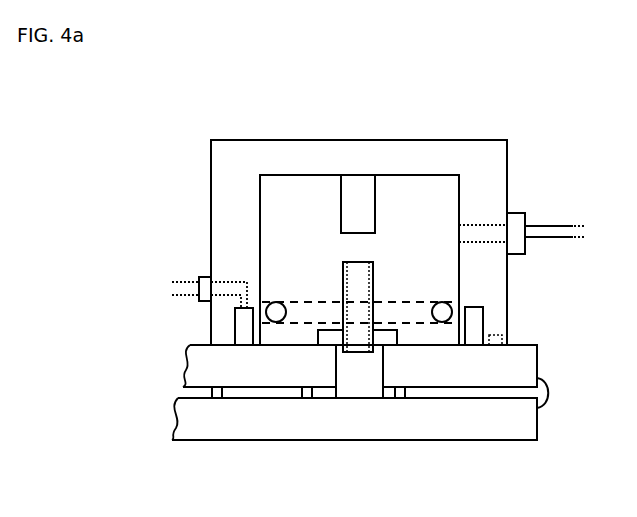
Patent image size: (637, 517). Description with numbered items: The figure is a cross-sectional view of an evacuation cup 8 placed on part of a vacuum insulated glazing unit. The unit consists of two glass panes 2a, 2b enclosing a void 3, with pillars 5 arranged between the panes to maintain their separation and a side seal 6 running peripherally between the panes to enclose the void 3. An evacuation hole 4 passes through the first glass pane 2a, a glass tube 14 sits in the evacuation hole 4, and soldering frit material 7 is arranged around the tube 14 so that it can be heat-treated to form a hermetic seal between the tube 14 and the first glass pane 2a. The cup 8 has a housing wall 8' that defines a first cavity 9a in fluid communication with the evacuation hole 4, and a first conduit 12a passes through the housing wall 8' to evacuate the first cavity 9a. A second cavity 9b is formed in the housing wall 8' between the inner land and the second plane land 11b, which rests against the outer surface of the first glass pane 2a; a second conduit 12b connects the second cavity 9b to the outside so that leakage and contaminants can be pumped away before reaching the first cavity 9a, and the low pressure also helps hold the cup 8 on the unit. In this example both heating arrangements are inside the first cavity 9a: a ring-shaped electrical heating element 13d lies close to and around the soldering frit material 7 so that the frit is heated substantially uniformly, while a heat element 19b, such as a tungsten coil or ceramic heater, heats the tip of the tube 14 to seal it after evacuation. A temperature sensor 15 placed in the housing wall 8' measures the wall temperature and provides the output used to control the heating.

The evacuation cup 8 is at (359, 199).
The housing wall 8' is at (357, 126).
The first cavity 9a is at (359, 260).
The second cavity 9b is at (248, 333).
The heat element 19b is at (358, 214).
The first conduit 12a is at (485, 236).
The second conduit 12b is at (233, 291).
The ring-shaped electrical heating element 13d is at (273, 308).
The glass tube 14 is at (360, 294).
The soldering frit material 7 is at (333, 335).
The evacuation hole 4 is at (360, 371).
The second plane land 11b is at (198, 347).
The pillars 5 is at (398, 398).
The void 3 is at (482, 395).
The first glass pane 2a is at (465, 365).
The second glass pane 2b is at (464, 423).
The side seal 6 is at (548, 388).
The temperature sensor 15 is at (500, 338).